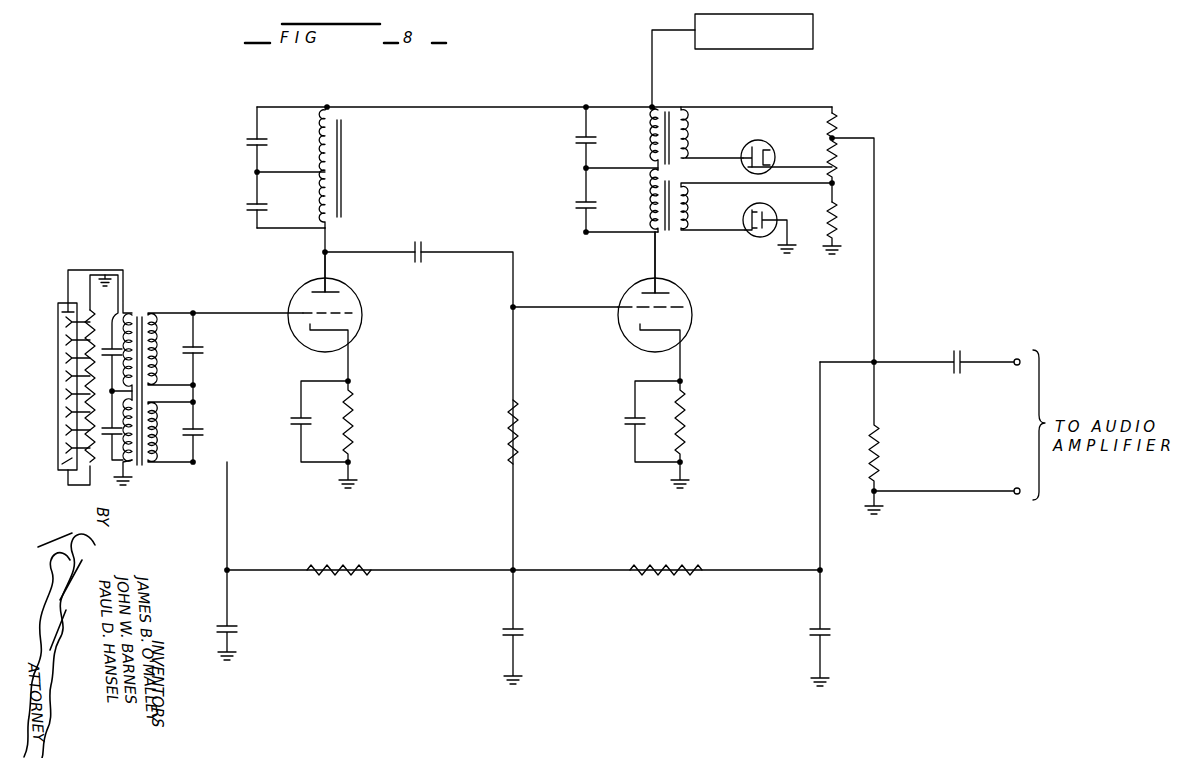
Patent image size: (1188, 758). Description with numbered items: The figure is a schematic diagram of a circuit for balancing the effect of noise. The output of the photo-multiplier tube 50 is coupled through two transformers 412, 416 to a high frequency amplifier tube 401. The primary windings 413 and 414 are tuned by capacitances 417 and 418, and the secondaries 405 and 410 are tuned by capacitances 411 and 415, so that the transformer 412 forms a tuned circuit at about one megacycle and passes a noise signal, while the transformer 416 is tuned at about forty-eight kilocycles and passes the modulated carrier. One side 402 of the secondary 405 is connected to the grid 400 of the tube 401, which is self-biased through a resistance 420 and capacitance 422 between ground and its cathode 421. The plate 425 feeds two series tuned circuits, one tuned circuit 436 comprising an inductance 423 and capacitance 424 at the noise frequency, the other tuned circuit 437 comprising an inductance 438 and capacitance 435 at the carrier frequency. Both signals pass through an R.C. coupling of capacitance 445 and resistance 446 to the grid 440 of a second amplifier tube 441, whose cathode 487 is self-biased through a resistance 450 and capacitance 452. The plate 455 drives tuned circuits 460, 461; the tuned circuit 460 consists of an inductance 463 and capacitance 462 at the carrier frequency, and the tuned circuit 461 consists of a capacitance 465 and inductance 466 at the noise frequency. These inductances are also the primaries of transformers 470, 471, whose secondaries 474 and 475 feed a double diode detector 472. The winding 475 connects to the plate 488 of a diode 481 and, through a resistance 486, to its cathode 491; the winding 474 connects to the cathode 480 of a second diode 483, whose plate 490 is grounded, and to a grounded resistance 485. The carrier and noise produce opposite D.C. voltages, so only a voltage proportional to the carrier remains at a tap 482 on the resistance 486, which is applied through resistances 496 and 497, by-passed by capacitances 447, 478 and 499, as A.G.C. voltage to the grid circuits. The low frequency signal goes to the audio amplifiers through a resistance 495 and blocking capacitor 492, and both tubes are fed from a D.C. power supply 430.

The photo-multiplier tube 50 is at (64, 303).
The primary winding 413 is at (111, 292).
The capacitance 417 is at (112, 357).
The capacitance 418 is at (112, 433).
The primary winding 414 is at (122, 455).
The transformer 416 is at (139, 470).
The transformer 412 is at (149, 309).
The secondary winding 410 is at (158, 449).
The side of secondary 402 is at (184, 311).
The secondary winding 405 is at (178, 344).
The capacitance 411 is at (205, 351).
The capacitance 415 is at (205, 432).
The tuned circuit 436 is at (286, 130).
The capacitance 424 is at (246, 143).
The capacitance 435 is at (236, 206).
The tuned circuit 437 is at (297, 220).
The inductance 423 is at (320, 136).
The inductance 438 is at (345, 196).
The capacitance 445 is at (425, 242).
The high frequency amplifier tube 401 is at (372, 318).
The plate 425 is at (340, 290).
The grid 400 is at (308, 318).
The cathode 421 is at (353, 335).
The resistance 420 is at (360, 425).
The capacitance 422 is at (296, 414).
The second high frequency amplifier 441 is at (708, 315).
The plate 455 is at (670, 291).
The grid 440 is at (645, 318).
The cathode 487 is at (683, 333).
The resistance 450 is at (692, 425).
The capacitance 452 is at (618, 418).
The resistance 446 is at (530, 437).
The resistance 497 is at (367, 547).
The resistance 496 is at (692, 530).
The capacitance 499 is at (240, 630).
The capacitance 447 is at (526, 632).
The capacitance 478 is at (833, 632).
The capacitance 465 is at (574, 146).
The capacitance 462 is at (572, 207).
The inductance 466 is at (652, 141).
The inductance 463 is at (652, 207).
The tuned circuit 461 is at (644, 142).
The tuned circuit 460 is at (644, 200).
The transformer 471 is at (682, 107).
The transformer 470 is at (680, 239).
The secondary winding 475 is at (694, 146).
The secondary winding 474 is at (693, 219).
The diode 481 is at (765, 133).
The plate 488 is at (748, 165).
The cathode 491 is at (775, 157).
The tap 482 is at (832, 140).
The detector 472 is at (859, 110).
The resistance 486 is at (836, 160).
The grounded resistance 485 is at (836, 223).
The second diode 483 is at (758, 238).
The cathode 480 is at (772, 208).
The plate 490 is at (775, 217).
The D.C. power supply 430 is at (813, 33).
The blocking capacitor 492 is at (963, 350).
The resistance 495 is at (885, 452).